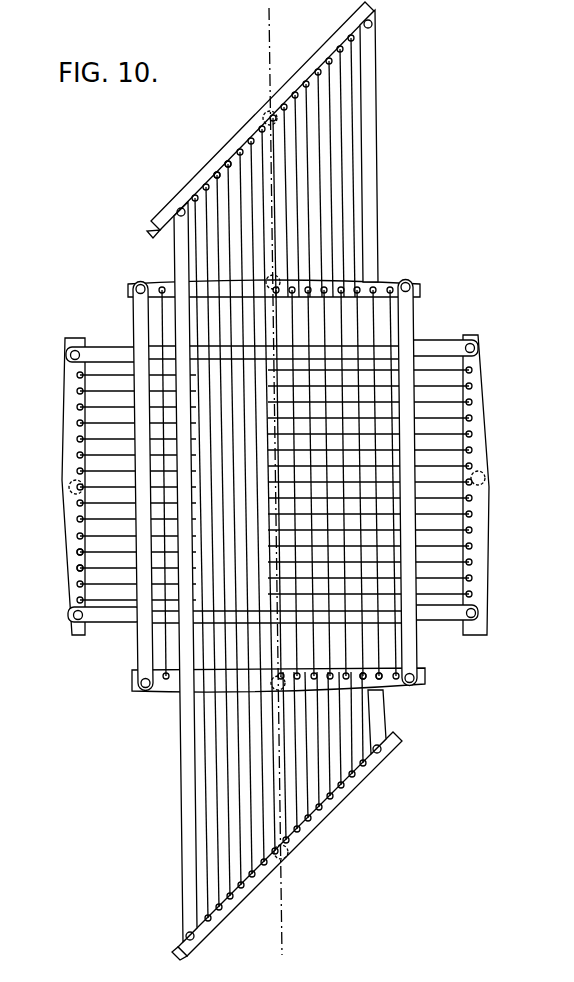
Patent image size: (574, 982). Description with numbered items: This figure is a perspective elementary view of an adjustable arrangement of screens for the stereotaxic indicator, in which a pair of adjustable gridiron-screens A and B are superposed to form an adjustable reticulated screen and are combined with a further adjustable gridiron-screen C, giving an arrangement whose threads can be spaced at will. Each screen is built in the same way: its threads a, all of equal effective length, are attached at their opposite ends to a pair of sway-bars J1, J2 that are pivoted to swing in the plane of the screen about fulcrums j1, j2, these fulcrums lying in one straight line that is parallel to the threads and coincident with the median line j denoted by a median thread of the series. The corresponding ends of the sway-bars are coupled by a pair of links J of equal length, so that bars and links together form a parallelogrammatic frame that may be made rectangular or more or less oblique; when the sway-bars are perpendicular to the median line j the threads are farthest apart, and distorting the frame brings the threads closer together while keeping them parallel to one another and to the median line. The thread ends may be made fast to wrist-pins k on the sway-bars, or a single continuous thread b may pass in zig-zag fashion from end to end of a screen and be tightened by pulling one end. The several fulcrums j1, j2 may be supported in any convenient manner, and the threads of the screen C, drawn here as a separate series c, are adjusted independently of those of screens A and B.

The median line j is at (270, 18).
The fulcrum j1 is at (30, 487).
The fulcrum j2 is at (508, 473).
The wrist-pin k is at (225, 161).
The sway-bar J1 is at (42, 432).
The sway-bar J2 is at (502, 403).
The link J is at (376, 177).
The gridiron-screen A is at (275, 484).
The gridiron-screen B is at (275, 469).
The gridiron-screen C is at (275, 476).
The threads a is at (445, 520).
The continuous thread b is at (330, 672).
The strings of frame C c is at (225, 735).